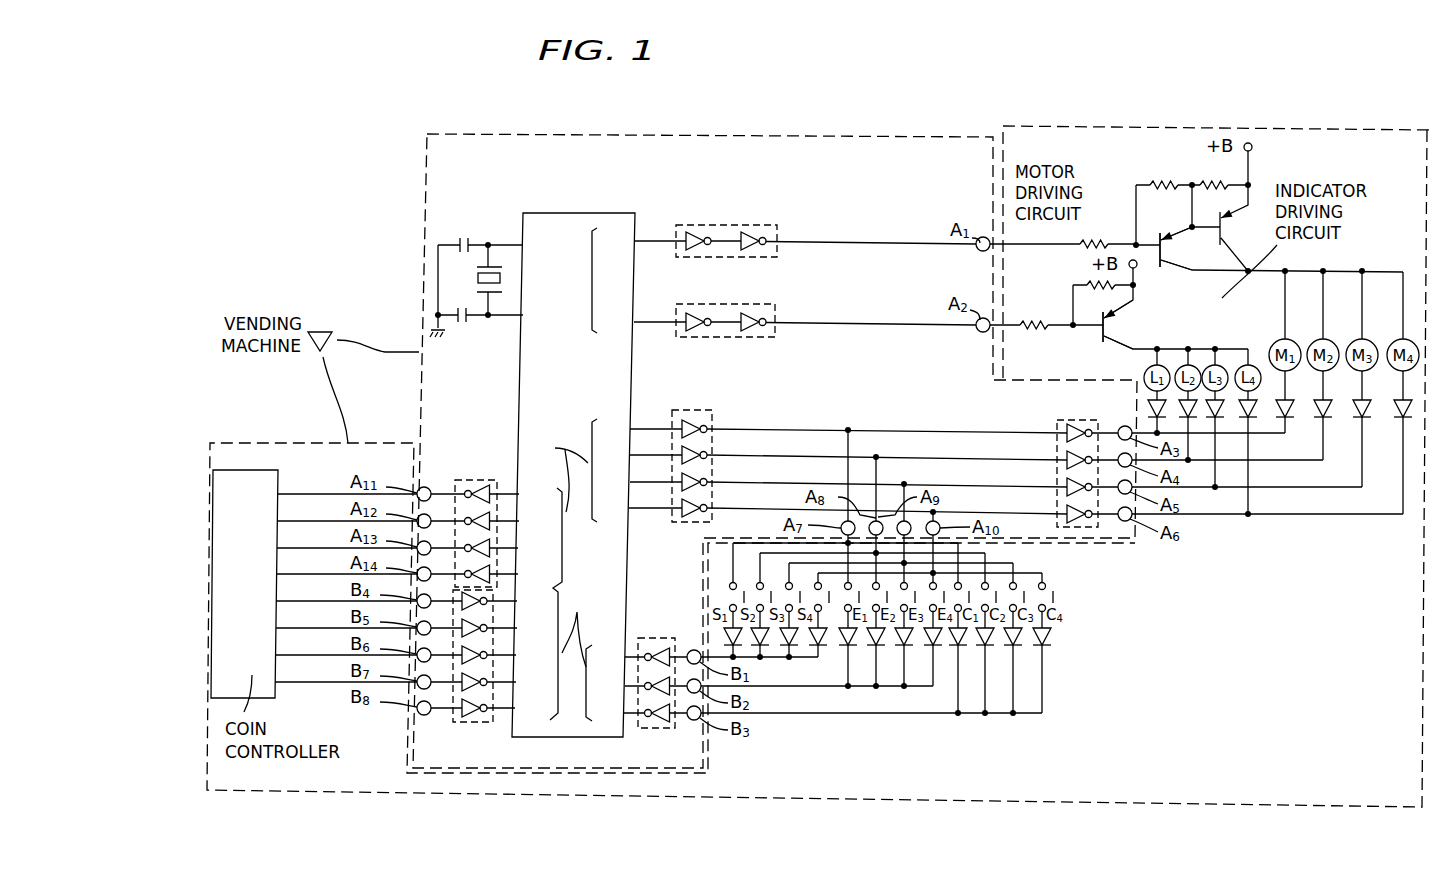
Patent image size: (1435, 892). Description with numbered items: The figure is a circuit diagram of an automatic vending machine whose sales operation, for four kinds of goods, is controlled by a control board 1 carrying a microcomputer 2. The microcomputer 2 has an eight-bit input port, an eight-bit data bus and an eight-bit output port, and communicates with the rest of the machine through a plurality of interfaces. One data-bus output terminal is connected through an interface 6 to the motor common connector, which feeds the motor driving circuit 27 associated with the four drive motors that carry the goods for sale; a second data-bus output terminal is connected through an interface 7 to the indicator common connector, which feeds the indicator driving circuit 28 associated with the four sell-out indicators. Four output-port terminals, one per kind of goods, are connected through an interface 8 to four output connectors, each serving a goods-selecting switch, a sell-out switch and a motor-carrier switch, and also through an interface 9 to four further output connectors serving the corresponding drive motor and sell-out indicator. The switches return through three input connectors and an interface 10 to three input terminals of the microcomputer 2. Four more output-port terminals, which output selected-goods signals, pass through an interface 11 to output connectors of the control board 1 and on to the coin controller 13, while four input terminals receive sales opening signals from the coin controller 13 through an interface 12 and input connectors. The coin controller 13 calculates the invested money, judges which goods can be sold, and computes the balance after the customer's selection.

The control board 1 is at (838, 137).
The microcomputer 2 is at (583, 213).
The interface 6 is at (724, 225).
The interface 7 is at (718, 304).
The interface 8 is at (697, 412).
The interface 9 is at (1081, 420).
The interface 10 is at (658, 638).
The interface 11 is at (477, 480).
The interface 12 is at (477, 724).
The coin controller 13 is at (252, 468).
The motor driving circuit 27 is at (1183, 175).
The indicator driving circuit 28 is at (1120, 324).